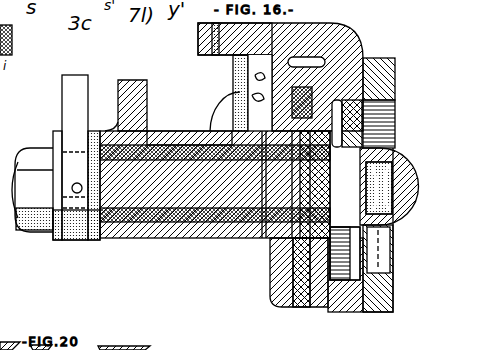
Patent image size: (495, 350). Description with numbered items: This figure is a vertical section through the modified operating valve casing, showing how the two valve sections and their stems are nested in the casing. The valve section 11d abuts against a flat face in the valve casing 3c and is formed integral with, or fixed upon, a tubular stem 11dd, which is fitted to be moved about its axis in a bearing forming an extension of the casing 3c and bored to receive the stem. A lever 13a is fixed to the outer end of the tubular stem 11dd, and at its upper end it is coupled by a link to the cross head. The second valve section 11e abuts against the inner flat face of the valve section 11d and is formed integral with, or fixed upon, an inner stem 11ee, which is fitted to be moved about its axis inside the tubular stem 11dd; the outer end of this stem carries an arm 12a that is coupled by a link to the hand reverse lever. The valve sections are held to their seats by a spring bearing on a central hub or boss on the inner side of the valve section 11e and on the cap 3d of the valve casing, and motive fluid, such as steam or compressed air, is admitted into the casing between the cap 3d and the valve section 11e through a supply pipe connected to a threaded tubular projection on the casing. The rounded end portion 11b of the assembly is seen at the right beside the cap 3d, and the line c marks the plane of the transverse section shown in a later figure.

The valve casing 3c is at (228, 240).
The cap 3d is at (385, 296).
The section line c c is at (262, 289).
The shaft end lobe 11b is at (384, 184).
The valve section 11d is at (305, 309).
The tubular stem 11dd is at (189, 240).
The valve section 11e is at (342, 312).
The stem 11ee is at (182, 142).
The plate and bolt 12a is at (70, 92).
The lever 13a is at (140, 80).